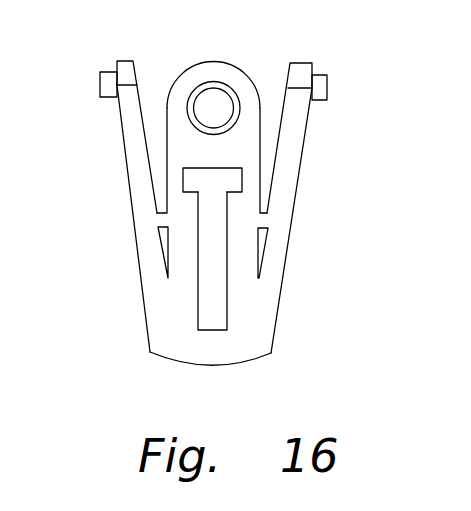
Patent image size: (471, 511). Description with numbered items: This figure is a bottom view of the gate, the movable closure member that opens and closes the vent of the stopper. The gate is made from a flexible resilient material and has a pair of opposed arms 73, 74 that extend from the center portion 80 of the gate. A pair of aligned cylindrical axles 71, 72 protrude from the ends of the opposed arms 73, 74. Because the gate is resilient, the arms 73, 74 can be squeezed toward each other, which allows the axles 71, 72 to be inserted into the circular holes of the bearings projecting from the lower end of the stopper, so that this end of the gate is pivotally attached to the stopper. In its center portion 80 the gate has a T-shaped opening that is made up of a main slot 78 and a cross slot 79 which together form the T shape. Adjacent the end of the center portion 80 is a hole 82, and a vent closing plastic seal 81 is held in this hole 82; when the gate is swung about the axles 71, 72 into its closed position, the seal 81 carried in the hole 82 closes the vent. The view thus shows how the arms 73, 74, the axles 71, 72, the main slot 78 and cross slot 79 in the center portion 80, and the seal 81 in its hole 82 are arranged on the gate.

The axle 71 is at (328, 85).
The axle 72 is at (100, 80).
The arm 73 is at (295, 208).
The arm 74 is at (132, 213).
The main slot 78 is at (217, 180).
The cross slot 79 is at (213, 287).
The center portion 80 is at (233, 66).
The vent closing plastic seal 81 is at (210, 107).
The hole 82 is at (193, 89).